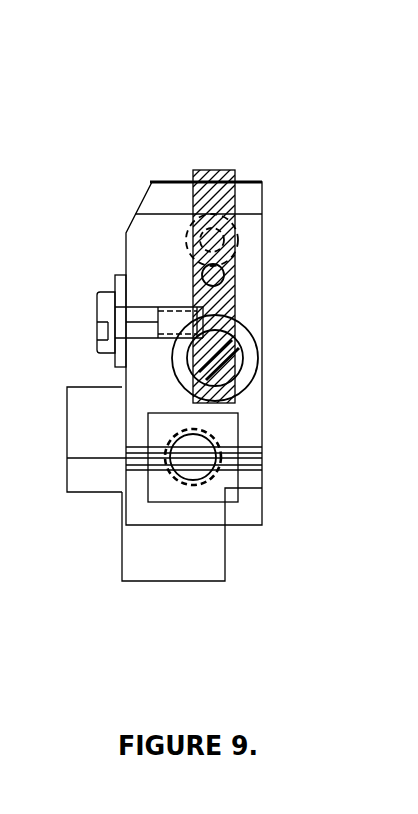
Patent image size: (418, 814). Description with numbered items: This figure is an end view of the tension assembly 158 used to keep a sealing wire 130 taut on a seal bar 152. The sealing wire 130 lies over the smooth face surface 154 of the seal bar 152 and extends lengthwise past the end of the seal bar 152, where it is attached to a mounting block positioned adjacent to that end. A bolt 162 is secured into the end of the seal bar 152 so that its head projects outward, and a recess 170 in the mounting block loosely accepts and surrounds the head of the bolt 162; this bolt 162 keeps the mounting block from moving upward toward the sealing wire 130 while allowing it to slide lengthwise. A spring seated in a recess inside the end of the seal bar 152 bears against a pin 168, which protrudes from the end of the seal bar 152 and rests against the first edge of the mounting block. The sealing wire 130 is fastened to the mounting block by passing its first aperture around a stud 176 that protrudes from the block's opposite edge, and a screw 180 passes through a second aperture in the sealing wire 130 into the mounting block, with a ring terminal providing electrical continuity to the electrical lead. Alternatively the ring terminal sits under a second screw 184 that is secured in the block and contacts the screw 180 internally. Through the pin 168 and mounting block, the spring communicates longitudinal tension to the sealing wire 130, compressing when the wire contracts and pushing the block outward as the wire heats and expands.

The tension mechanism 158 is at (160, 130).
The smooth face surface 154 is at (173, 182).
The seal bar 152 is at (88, 425).
The sealing wire 130 is at (215, 169).
The pin 168 is at (237, 235).
The stud 176 is at (229, 280).
The screw 180 is at (251, 381).
The recess 170 is at (210, 503).
The bolt 162 is at (218, 437).
The second screw 184 is at (95, 310).